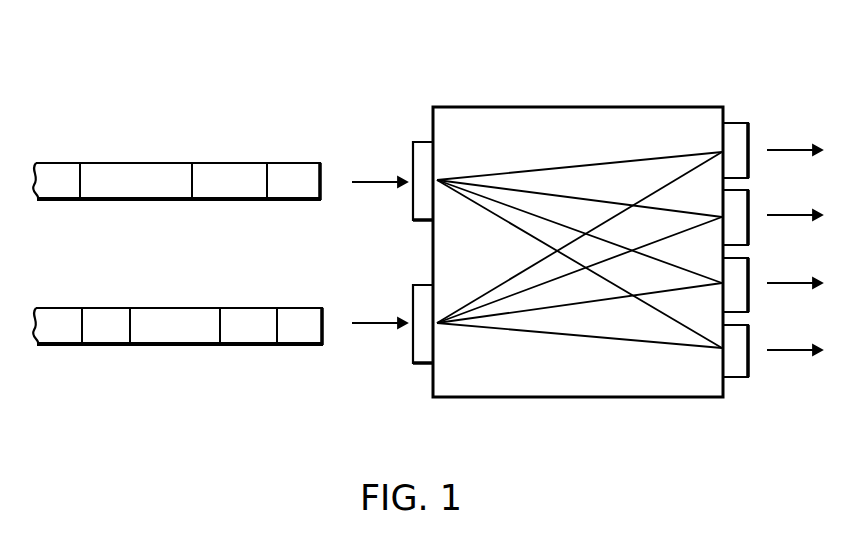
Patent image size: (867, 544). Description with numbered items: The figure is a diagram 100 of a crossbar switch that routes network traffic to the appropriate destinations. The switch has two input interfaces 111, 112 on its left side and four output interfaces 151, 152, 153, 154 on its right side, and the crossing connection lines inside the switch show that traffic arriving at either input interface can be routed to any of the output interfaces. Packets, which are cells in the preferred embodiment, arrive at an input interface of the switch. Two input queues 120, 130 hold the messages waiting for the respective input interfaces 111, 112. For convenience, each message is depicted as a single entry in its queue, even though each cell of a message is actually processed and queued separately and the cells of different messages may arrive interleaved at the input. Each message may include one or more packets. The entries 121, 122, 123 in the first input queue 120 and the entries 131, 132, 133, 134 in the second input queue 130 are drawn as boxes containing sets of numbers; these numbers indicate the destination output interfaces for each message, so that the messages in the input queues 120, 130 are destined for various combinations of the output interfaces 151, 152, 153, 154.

The diagram of a cross bar switch 100 is at (170, 54).
The input interface 111 is at (413, 221).
The input interface 112 is at (413, 364).
The input queue 120 is at (320, 164).
The queue entry 121 is at (291, 201).
The queue entry 122 is at (229, 201).
The queue entry 123 is at (136, 201).
The input queue 130 is at (322, 309).
The queue entry 131 is at (301, 346).
The queue entry 132 is at (241, 346).
The queue entry 133 is at (174, 346).
The queue entry 134 is at (97, 346).
The output interface 151 is at (748, 124).
The output interface 152 is at (748, 191).
The output interface 153 is at (748, 259).
The output interface 154 is at (748, 326).